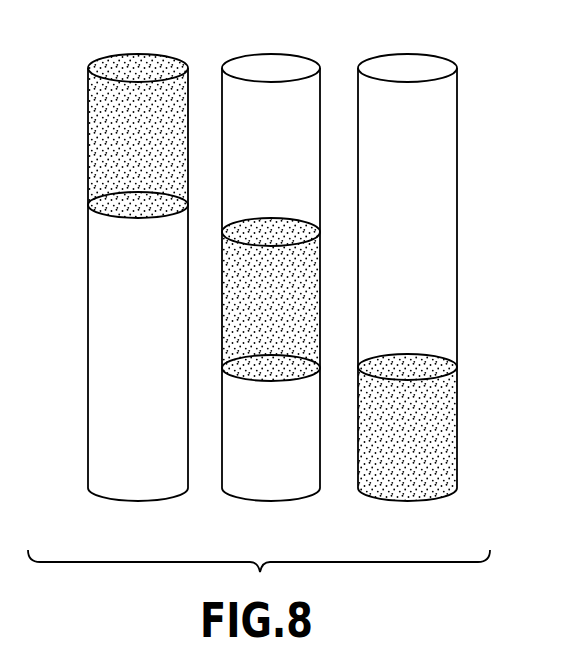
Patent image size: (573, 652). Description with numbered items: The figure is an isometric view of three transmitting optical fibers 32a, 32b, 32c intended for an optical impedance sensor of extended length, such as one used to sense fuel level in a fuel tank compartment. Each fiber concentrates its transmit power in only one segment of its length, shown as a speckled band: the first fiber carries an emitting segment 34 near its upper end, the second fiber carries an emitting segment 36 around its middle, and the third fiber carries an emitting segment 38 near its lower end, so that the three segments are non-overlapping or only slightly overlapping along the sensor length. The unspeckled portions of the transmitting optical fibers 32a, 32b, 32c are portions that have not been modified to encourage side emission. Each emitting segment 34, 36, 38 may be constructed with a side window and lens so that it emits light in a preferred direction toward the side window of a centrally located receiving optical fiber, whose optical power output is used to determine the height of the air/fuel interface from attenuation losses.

The transmitting optical fiber 32a is at (88, 262).
The transmitting optical fiber 32b is at (307, 90).
The transmitting optical fiber 32c is at (457, 277).
The emitting segment 34 is at (97, 122).
The emitting segment 36 is at (264, 367).
The emitting segment 38 is at (446, 408).